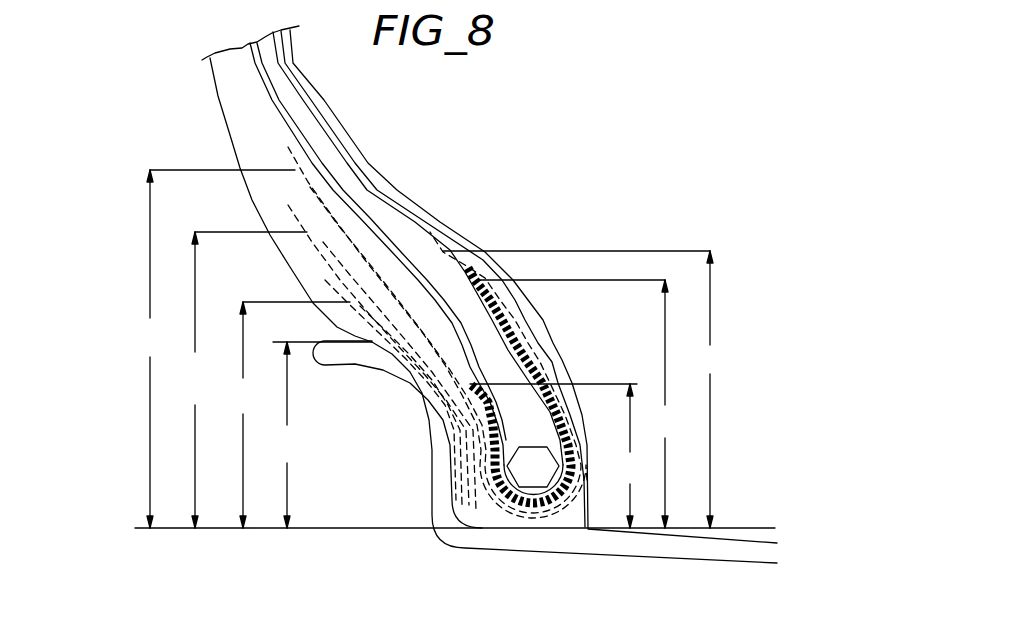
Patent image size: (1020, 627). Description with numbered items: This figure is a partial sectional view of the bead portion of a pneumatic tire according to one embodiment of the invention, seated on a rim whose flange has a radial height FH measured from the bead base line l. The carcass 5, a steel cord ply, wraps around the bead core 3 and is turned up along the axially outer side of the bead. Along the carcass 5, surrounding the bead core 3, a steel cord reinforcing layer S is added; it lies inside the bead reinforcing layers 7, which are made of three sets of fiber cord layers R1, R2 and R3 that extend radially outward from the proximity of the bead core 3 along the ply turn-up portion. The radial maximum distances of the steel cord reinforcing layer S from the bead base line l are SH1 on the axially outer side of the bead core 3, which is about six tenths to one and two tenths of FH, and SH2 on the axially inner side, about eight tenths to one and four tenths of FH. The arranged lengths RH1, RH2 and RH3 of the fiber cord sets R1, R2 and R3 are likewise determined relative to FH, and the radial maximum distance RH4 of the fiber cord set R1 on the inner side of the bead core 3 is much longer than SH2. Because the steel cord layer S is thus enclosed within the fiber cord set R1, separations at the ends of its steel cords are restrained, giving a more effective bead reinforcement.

The bead core 3 is at (533, 520).
The carcass 5 is at (439, 279).
The bead reinforcing layers 7 is at (406, 397).
The steel cord reinforcing layer S is at (520, 385).
The fiber cord set R1 is at (387, 332).
The fiber cord set R2 is at (350, 357).
The fiber cord set R3 is at (370, 392).
The arranged length of fiber cord set R1 RH1 is at (211, 349).
The arranged length of fiber cord set R2 RH2 is at (242, 380).
The arranged length of fiber cord set R3 RH3 is at (286, 415).
The radial maximum distance of fiber cord set R1 on the inner side RH4 is at (591, 389).
The radial maximum distance of steel cord layer on the outer side SH1 is at (560, 456).
The radial maximum distance of steel cord layer on the inner side SH2 is at (585, 404).
The radial length of the rim flange FH is at (322, 435).
The bead base line l is at (347, 504).